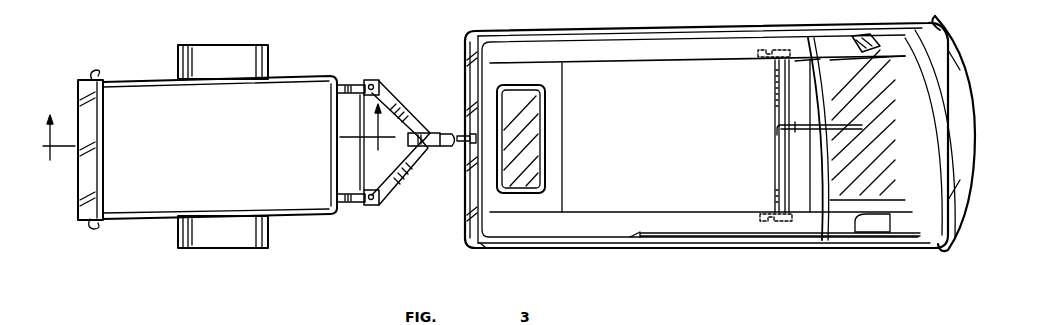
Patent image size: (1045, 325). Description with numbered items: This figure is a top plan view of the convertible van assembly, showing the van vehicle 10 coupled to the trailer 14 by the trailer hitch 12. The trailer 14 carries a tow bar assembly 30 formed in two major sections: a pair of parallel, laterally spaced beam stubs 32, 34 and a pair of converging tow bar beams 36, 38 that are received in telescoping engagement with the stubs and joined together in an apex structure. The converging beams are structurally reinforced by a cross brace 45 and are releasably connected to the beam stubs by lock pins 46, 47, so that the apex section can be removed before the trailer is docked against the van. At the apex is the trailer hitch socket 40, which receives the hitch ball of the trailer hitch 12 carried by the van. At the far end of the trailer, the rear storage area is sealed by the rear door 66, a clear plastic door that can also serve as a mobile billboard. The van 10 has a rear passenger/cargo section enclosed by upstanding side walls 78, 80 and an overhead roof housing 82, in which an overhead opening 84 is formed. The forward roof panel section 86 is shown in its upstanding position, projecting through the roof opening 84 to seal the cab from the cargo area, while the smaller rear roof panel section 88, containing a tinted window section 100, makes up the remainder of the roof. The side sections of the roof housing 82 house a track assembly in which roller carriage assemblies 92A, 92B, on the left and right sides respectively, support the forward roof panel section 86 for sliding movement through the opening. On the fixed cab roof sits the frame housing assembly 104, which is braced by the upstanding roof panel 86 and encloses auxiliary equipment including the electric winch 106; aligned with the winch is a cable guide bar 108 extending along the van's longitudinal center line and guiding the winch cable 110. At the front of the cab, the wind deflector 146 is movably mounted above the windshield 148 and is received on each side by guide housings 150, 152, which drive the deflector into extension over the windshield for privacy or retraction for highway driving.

The van vehicle 10 is at (657, 161).
The trailer hitch 12 is at (450, 122).
The trailer 14 is at (158, 66).
The tow bar assembly 30 is at (371, 149).
The beam stub 32 is at (348, 83).
The beam stub 34 is at (358, 205).
The converging tow bar beam 36 is at (388, 82).
The converging tow bar beam 38 is at (410, 170).
The trailer hitch socket 40 is at (448, 148).
The cross brace 45 is at (355, 107).
The lock pin 46 is at (372, 206).
The lock pin 47 is at (372, 82).
The rear door 66 is at (85, 108).
The side wall 78 is at (577, 243).
The side wall 80 is at (522, 31).
The roof housing 82 is at (628, 41).
The overhead opening 84 is at (670, 62).
The forward roof panel section 86 is at (770, 124).
The rear roof panel section 88 is at (562, 75).
The roller carriage assembly 92A is at (766, 50).
The roller carriage assembly 92B is at (790, 226).
The tinted window section 100 is at (527, 160).
The frame housing assembly 104 is at (778, 106).
The electric winch 106 is at (870, 163).
The cable guide bar 108 is at (808, 134).
The winch cable 110 is at (794, 131).
The wind deflector 146 is at (829, 215).
The windshield 148 is at (898, 240).
The guide housing 150 is at (864, 235).
The guide housing 152 is at (864, 38).